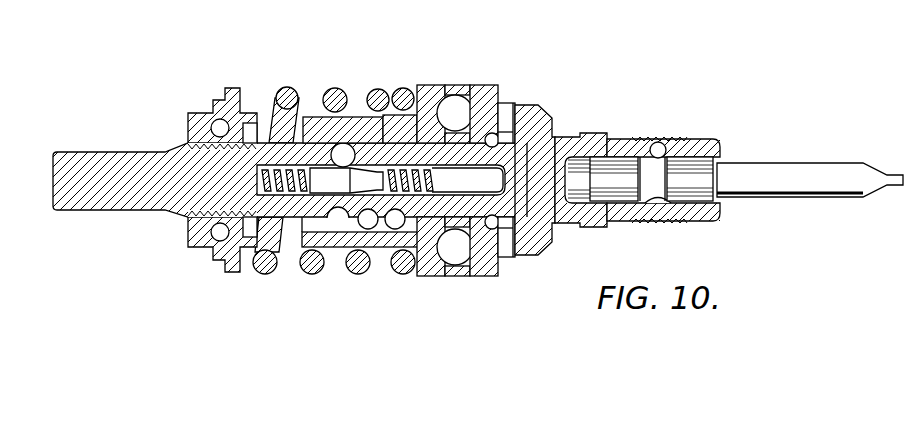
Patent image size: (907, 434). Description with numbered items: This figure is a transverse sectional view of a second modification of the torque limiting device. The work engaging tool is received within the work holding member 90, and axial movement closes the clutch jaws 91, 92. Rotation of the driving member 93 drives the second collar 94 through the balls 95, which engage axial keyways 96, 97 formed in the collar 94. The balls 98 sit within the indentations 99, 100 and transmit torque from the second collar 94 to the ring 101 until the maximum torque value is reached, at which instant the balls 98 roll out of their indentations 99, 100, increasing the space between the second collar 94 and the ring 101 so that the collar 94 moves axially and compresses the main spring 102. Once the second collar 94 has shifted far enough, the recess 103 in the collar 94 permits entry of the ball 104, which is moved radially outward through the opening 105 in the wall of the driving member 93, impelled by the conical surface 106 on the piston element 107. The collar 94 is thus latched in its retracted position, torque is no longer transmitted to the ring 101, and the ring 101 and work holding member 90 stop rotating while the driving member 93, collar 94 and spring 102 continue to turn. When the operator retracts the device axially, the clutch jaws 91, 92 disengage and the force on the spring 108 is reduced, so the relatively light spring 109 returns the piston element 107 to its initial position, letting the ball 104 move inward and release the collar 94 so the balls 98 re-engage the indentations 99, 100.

The work holding member 90 is at (703, 140).
The clutch jaw 91 is at (523, 119).
The clutch jaw 92 is at (515, 107).
The driving member 93 is at (114, 167).
The second collar 94 is at (433, 265).
The balls 95 is at (394, 225).
The axial keyway 96 is at (366, 225).
The axial keyway 97 is at (345, 210).
The balls 98 is at (456, 100).
The indentation 99 is at (438, 104).
The indentation 100 is at (481, 87).
The ring 101 is at (480, 258).
The main spring 102 is at (336, 93).
The recess 103 is at (354, 132).
The ball 104 is at (340, 150).
The opening 105 is at (331, 146).
The conical surface 106 is at (374, 168).
The piston element 107 is at (306, 196).
The spring 108 is at (434, 180).
The light spring 109 is at (283, 192).